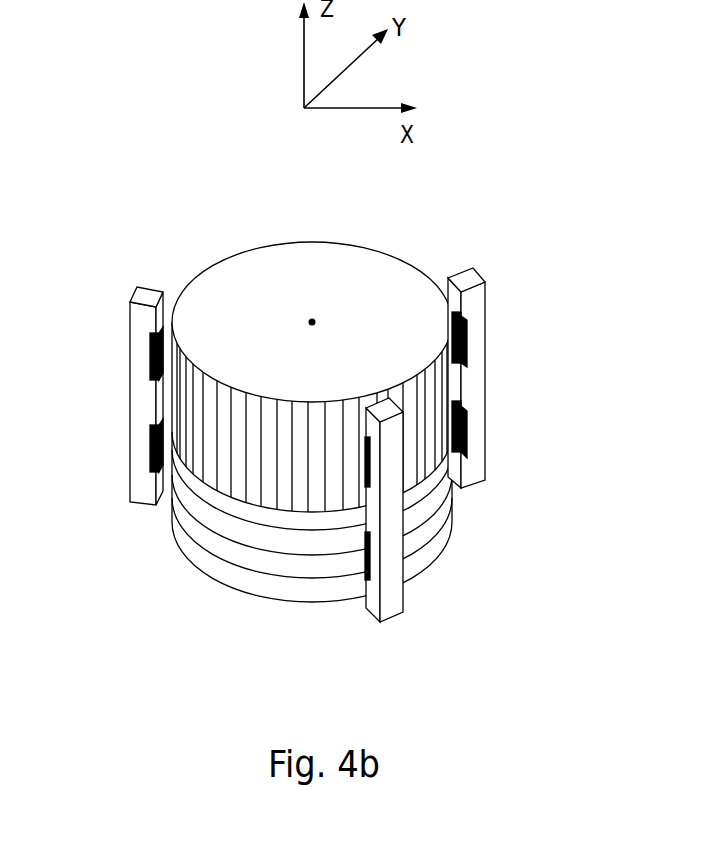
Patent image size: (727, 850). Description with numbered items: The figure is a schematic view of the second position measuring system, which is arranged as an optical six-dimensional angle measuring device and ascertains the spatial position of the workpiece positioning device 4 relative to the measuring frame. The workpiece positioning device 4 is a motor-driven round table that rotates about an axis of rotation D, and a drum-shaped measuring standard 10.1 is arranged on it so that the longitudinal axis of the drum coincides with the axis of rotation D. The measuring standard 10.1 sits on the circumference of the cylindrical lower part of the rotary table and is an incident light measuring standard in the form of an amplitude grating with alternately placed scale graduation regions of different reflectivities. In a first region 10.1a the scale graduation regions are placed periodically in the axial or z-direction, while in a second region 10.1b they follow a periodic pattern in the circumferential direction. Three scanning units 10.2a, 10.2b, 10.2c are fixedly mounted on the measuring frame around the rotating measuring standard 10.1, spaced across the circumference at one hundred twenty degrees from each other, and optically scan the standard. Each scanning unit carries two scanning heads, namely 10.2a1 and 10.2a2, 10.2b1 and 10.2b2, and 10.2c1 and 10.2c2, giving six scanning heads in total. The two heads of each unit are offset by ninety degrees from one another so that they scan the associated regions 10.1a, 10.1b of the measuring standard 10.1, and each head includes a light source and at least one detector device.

The workpiece positioning device 4 is at (262, 261).
The axis of rotation D is at (316, 322).
The measuring standard 10.1 is at (279, 490).
The first region 10.1a is at (278, 582).
The second region 10.1b is at (250, 478).
The scanning unit 10.2a is at (99, 396).
The scanning head 10.2a1 is at (150, 348).
The scanning head 10.2a2 is at (150, 457).
The scanning unit 10.2b is at (428, 523).
The scanning head 10.2b1 is at (369, 460).
The scanning head 10.2b2 is at (366, 559).
The scanning unit 10.2c is at (517, 378).
The scanning head 10.2c1 is at (467, 338).
The scanning head 10.2c2 is at (468, 430).